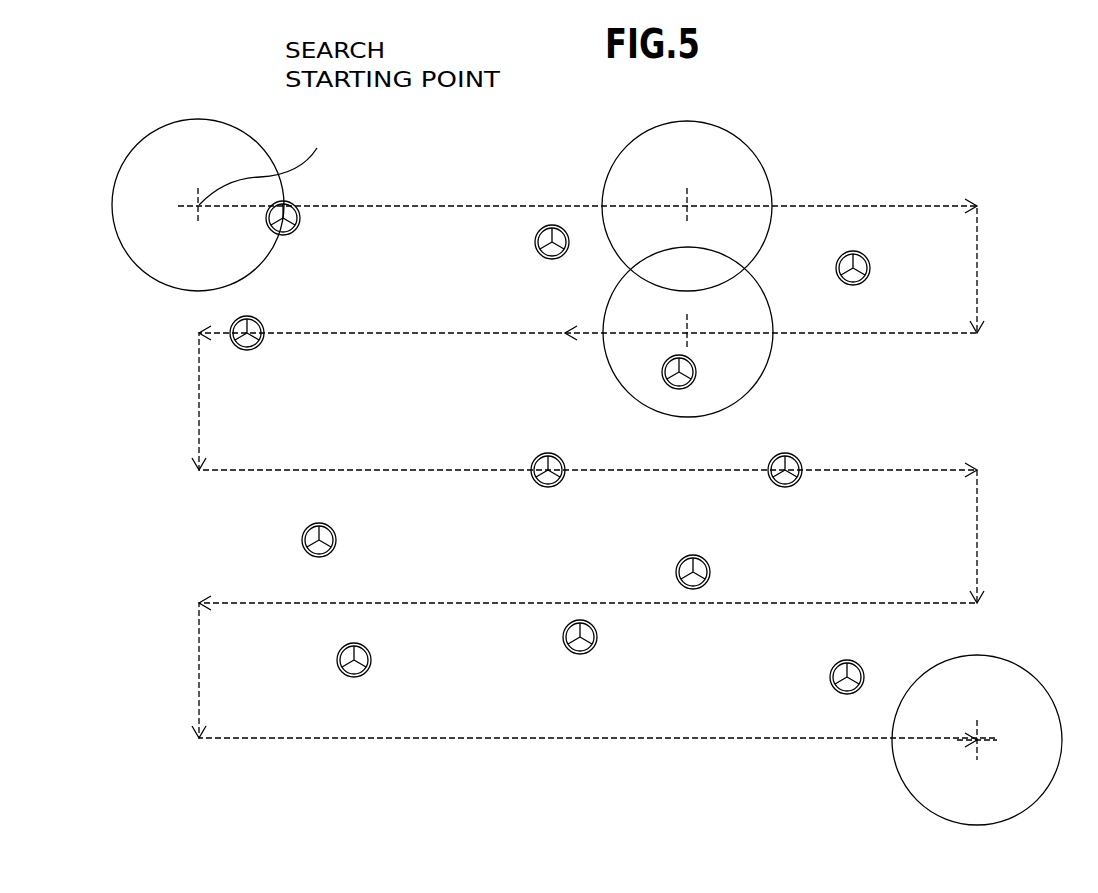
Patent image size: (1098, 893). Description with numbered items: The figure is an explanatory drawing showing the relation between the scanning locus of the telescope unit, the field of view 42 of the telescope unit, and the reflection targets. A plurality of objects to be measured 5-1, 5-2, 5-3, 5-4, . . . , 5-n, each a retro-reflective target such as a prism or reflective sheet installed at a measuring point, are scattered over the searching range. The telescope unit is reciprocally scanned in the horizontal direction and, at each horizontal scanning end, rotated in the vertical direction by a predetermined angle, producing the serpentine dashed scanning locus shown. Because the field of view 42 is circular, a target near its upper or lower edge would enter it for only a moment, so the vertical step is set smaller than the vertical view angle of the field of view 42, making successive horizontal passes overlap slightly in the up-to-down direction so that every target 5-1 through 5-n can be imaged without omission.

The field of view 42 is at (244, 281).
The object to be measured 5-1 is at (300, 222).
The object to be measured 5-2 is at (545, 225).
The object to be measured 5-3 is at (870, 262).
The object to be measured 5-4 is at (662, 376).
The object to be measured 5-n is at (830, 672).